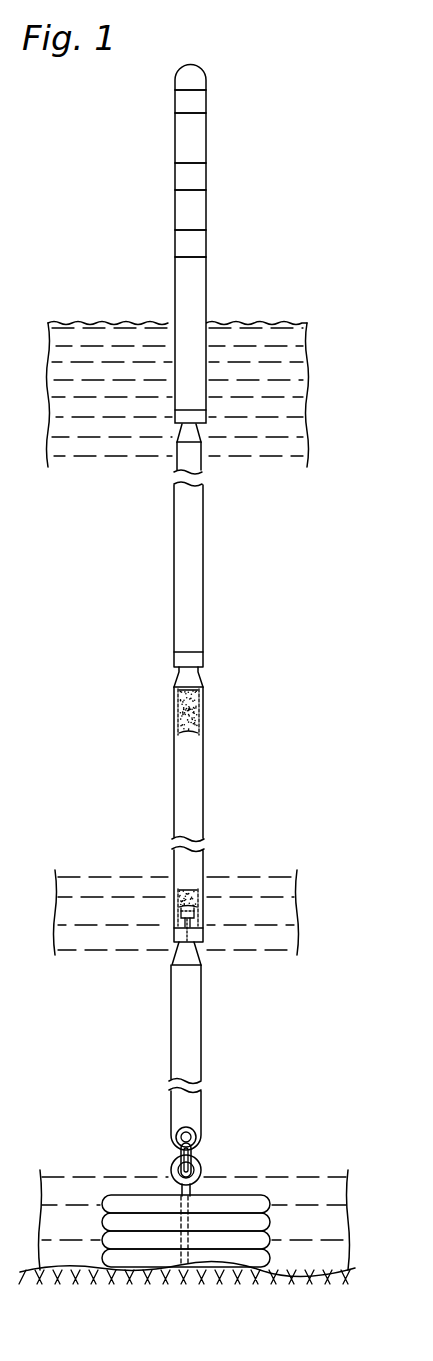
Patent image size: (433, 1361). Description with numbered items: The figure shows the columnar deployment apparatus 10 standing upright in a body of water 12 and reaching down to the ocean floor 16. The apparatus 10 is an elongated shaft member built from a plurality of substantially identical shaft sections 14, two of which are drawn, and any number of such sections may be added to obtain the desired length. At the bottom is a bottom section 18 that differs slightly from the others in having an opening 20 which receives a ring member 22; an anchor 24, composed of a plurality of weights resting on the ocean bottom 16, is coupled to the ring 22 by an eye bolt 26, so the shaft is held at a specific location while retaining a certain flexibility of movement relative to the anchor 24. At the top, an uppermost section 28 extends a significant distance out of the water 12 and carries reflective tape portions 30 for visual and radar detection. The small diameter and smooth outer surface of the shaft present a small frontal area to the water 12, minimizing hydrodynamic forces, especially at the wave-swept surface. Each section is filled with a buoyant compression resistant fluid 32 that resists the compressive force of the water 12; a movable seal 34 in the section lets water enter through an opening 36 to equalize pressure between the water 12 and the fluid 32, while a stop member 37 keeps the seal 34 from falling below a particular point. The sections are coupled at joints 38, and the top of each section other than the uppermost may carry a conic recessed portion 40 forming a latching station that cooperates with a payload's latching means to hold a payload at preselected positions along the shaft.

The columnar deployment apparatus 10 is at (157, 231).
The water 12 is at (302, 1190).
The shaft sections 14 is at (193, 562).
The ocean floor 16 is at (60, 1275).
The bottom section 18 is at (182, 1012).
The opening 20 is at (194, 1134).
The ring member 22 is at (192, 1153).
The anchor 24 is at (270, 1220).
The eye bolt 26 is at (191, 1192).
The uppermost section 28 is at (207, 138).
The reflective tape portions 30 is at (207, 101).
The buoyant compression resistant fluid 32 is at (190, 892).
The movable seal 34 is at (180, 917).
The opening 36 is at (198, 920).
The stop member 37 is at (197, 908).
The joints 38 is at (203, 413).
The recessed portion 40 is at (177, 428).